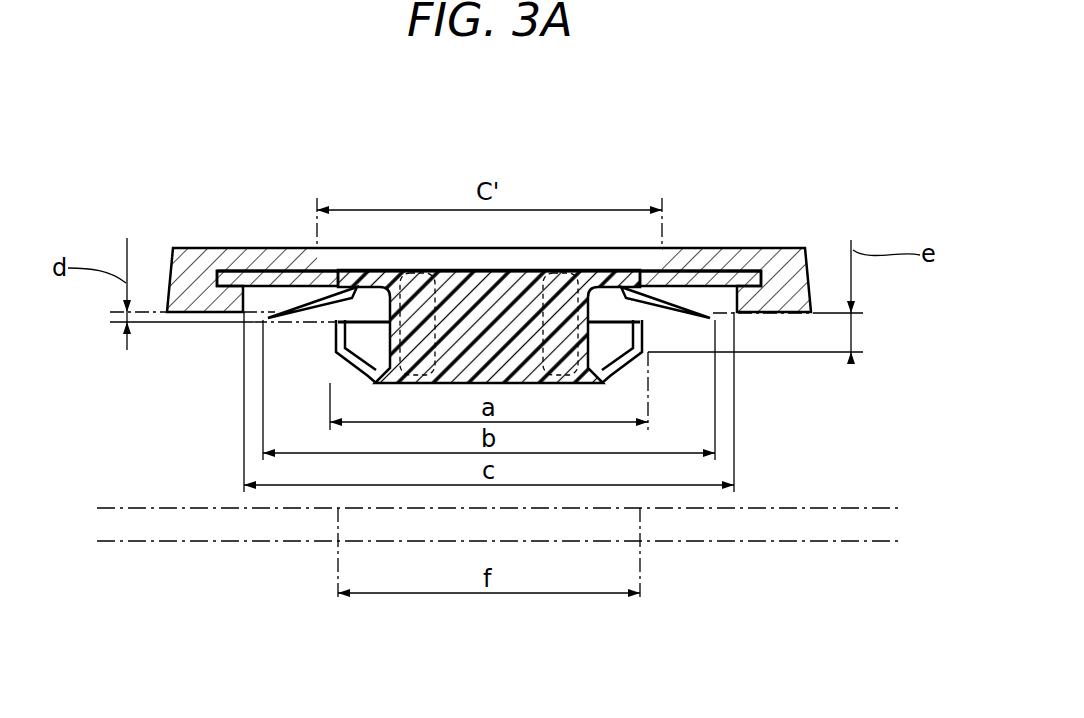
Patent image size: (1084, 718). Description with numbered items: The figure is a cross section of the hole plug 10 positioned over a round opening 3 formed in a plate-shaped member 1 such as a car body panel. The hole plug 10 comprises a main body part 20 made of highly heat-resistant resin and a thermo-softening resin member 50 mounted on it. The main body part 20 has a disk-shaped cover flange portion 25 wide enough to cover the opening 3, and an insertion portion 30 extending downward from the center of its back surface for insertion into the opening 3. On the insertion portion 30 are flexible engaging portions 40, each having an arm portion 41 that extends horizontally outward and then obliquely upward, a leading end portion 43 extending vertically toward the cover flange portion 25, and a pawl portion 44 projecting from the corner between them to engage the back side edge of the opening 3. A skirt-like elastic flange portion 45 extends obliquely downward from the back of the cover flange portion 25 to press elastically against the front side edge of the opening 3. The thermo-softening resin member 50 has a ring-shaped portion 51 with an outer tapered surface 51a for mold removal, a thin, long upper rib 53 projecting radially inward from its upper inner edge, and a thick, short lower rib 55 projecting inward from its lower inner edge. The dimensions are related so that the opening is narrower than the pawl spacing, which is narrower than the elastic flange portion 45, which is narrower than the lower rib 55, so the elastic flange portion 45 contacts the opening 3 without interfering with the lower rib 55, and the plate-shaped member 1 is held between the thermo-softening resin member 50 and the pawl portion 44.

The plate-shaped member 1 is at (153, 543).
The opening 3 is at (338, 527).
The hole plug 10 is at (533, 279).
The main body part 20 is at (640, 258).
The cover flange portion 25 is at (338, 274).
The insertion portion 30 is at (720, 375).
The engaging portion 40 is at (278, 380).
The arm portion 41 is at (650, 372).
The leading end portion 43 is at (645, 334).
The pawl portion 44 is at (655, 358).
The elastic flange portion 45 is at (300, 320).
The thermo-softening resin member 50 is at (520, 240).
The ring-shaped portion 51 is at (810, 280).
The tapered surface 51a is at (172, 275).
The upper rib 53 is at (724, 272).
The lower rib 55 is at (740, 300).